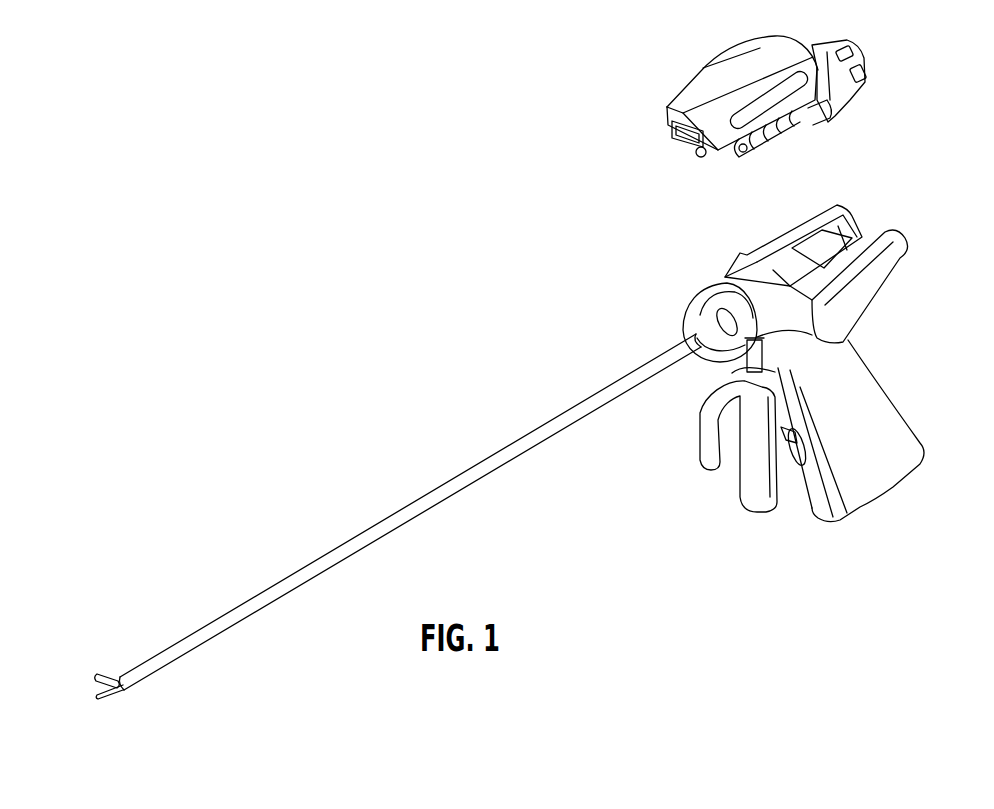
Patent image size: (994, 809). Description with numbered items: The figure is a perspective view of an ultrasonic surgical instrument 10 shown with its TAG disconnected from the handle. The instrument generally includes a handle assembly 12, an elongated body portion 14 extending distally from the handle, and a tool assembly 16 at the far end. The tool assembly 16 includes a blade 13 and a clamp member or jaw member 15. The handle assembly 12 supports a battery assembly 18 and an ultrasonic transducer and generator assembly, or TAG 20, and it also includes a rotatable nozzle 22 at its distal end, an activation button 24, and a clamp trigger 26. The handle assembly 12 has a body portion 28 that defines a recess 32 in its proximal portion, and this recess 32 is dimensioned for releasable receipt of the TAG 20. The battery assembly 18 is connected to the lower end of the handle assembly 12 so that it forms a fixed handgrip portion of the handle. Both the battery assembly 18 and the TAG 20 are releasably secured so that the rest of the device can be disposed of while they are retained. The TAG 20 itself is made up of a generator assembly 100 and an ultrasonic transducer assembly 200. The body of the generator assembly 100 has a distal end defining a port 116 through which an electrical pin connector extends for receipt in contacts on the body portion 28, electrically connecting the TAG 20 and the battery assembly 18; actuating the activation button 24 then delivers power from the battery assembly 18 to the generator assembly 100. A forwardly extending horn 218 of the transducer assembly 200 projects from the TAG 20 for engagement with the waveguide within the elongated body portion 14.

The ultrasonic surgical instrument 10 is at (384, 290).
The handle assembly 12 is at (652, 243).
The blade 13 is at (108, 700).
The elongated body portion 14 is at (208, 636).
The clamp member or jaw member 15 is at (107, 675).
The tool assembly 16 is at (80, 658).
The battery assembly 18 is at (893, 390).
The ultrasonic transducer and generator assembly (TAG) 20 is at (672, 52).
The rotatable nozzle 22 is at (697, 291).
The activation button 24 is at (745, 362).
The clamp trigger 26 is at (748, 481).
The body portion 28 is at (830, 313).
The recess 32 is at (842, 245).
The generator assembly 100 is at (666, 90).
The port 116 is at (672, 127).
The ultrasonic transducer assembly 200 is at (825, 130).
The horn 218 is at (706, 158).